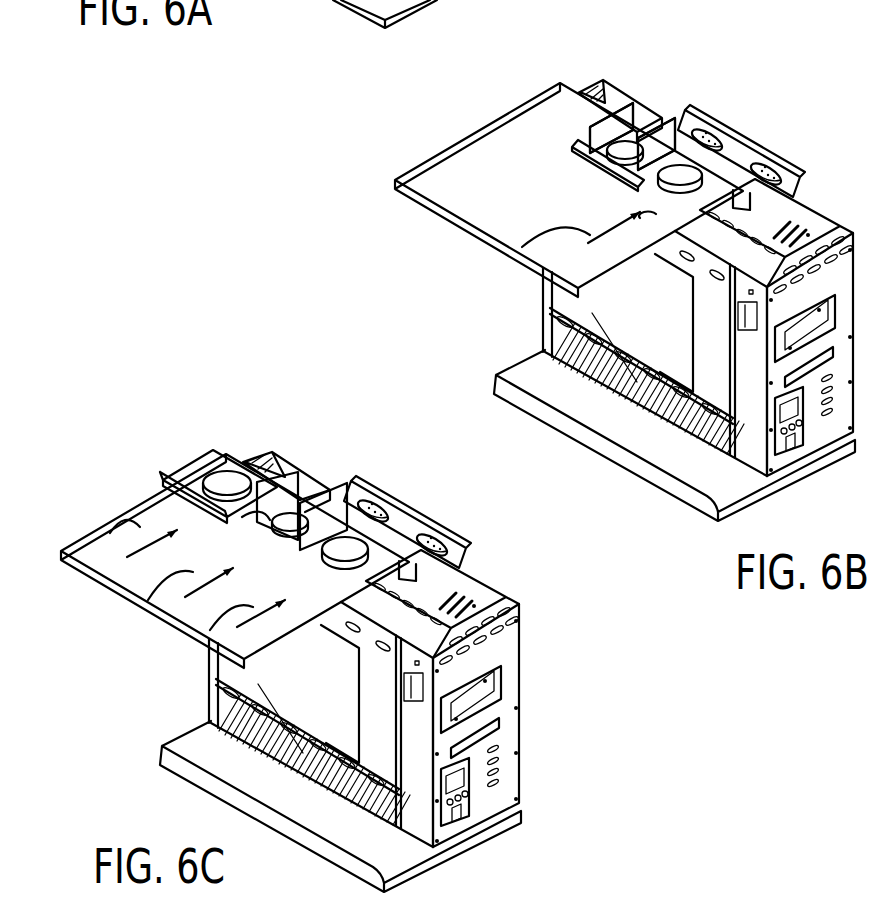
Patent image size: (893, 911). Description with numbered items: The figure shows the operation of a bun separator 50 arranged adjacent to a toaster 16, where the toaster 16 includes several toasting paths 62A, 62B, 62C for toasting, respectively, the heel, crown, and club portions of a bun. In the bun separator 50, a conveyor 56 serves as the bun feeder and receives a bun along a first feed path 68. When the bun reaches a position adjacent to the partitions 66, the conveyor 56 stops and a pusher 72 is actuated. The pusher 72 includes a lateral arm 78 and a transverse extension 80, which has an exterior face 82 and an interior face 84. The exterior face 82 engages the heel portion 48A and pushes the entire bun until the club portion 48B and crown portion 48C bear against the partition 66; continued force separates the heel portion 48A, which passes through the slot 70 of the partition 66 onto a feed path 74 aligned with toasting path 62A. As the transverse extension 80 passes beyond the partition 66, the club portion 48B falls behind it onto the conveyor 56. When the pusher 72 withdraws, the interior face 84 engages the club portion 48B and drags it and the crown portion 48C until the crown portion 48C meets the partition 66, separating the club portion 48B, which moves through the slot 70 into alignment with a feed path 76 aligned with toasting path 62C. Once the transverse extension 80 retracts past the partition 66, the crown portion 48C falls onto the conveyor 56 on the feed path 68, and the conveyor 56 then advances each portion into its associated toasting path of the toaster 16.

In FIG. 6C, the toaster 16 is at (505, 597).
In FIG. 6B, the heel portion 48A is at (680, 187).
In FIG. 6B, the club portion 48B is at (627, 163).
In FIG. 6C, the club portion 48B is at (230, 473).
In FIG. 6C, the crown portion 48C is at (285, 535).
In FIG. 6B, the bun separator 50 is at (569, 162).
In FIG. 6B, the conveyor 56 is at (515, 108).
In FIG. 6C, the conveyor 56 is at (92, 553).
In FIG. 6B, the toasting path 62A is at (770, 139).
In FIG. 6C, the toasting path 62A is at (438, 527).
In FIG. 6C, the toasting path 62B is at (378, 495).
In FIG. 6C, the toasting path 62C is at (283, 470).
In FIG. 6B, the partitions 66 is at (620, 96).
In FIG. 6C, the partitions 66 is at (350, 510).
In FIG. 6C, the first feed path 68 is at (148, 600).
In FIG. 6B, the slot 70 is at (648, 155).
In FIG. 6C, the pusher 72 is at (167, 478).
In FIG. 6B, the feed path 74 is at (522, 247).
In FIG. 6C, the feed path 74 is at (207, 630).
In FIG. 6C, the feed path 76 is at (110, 533).
In FIG. 6B, the lateral arm 78 is at (580, 160).
In FIG. 6B, the transverse extension 80 is at (647, 215).
In FIG. 6C, the transverse extension 80 is at (242, 517).
In FIG. 6B, the exterior face 82 is at (767, 165).
In FIG. 6B, the interior face 84 is at (704, 128).